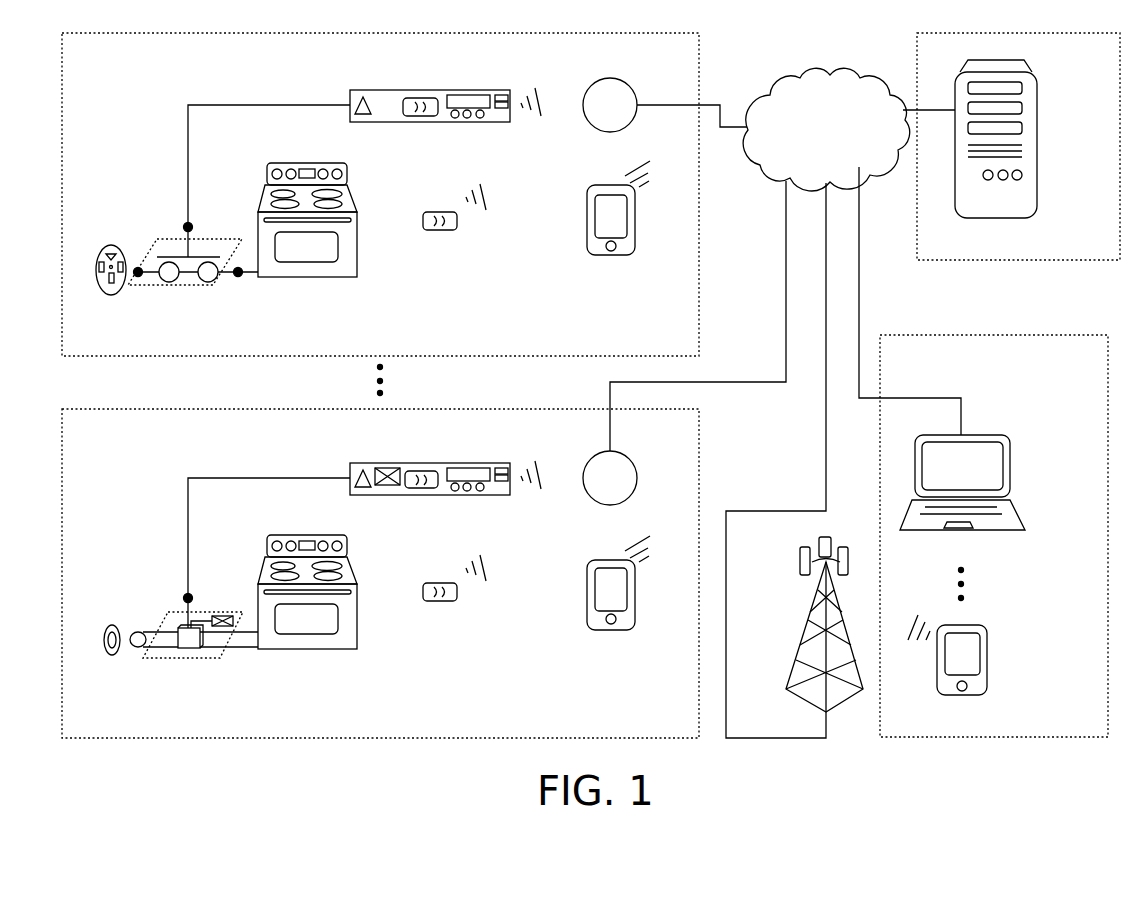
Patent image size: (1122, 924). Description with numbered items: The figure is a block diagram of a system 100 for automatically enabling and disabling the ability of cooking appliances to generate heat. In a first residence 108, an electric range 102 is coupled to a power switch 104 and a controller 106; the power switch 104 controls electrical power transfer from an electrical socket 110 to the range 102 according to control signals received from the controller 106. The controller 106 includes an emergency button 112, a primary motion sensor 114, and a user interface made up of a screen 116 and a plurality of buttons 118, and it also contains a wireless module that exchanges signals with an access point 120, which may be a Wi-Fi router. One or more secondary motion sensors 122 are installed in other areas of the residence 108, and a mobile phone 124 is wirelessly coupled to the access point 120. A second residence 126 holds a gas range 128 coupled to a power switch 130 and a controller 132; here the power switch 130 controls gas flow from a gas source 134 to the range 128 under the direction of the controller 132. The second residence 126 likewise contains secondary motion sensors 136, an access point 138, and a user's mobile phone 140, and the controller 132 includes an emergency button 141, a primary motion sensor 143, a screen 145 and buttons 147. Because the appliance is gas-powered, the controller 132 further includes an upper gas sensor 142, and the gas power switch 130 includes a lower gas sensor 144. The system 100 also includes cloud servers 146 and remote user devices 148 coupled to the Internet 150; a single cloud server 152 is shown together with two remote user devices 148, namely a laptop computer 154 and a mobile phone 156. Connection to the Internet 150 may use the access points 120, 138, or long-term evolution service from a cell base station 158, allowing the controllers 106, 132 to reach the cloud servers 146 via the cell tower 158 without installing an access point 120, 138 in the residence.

The system 100 is at (762, 217).
The electric range 102 is at (315, 277).
The power switch 104 is at (163, 287).
The controller 106 is at (423, 104).
The first residence 108 is at (690, 345).
The electrical socket 110 is at (107, 246).
The emergency button 112 is at (363, 116).
The primary motion sensor 114 is at (422, 118).
The screen 116 is at (466, 95).
The buttons 118 is at (467, 118).
The access point 120 is at (612, 79).
The secondary motion sensors 122 is at (433, 231).
The mobile phone 124 is at (611, 256).
The second residence 126 is at (690, 720).
The gas range 128 is at (320, 649).
The power switch 130 is at (194, 633).
The controller 132 is at (413, 481).
The gas source 134 is at (105, 632).
The secondary motion sensors 136 is at (433, 602).
The access point 138 is at (637, 478).
The mobile phone 140 is at (597, 631).
The emergency button 141 is at (368, 488).
The upper gas sensor 142 is at (390, 486).
The primary motion sensor 143 is at (430, 470).
The lower gas sensor 144 is at (220, 614).
The screen 145 is at (470, 467).
The cloud servers 146 is at (1102, 253).
The buttons 147 is at (467, 492).
The remote user devices 148 is at (1082, 366).
The Internet 150 is at (790, 78).
The cloud server 152 is at (1037, 108).
The laptop computer 154 is at (1012, 489).
The mobile phone 156 is at (990, 672).
The cell base station 158 is at (800, 633).